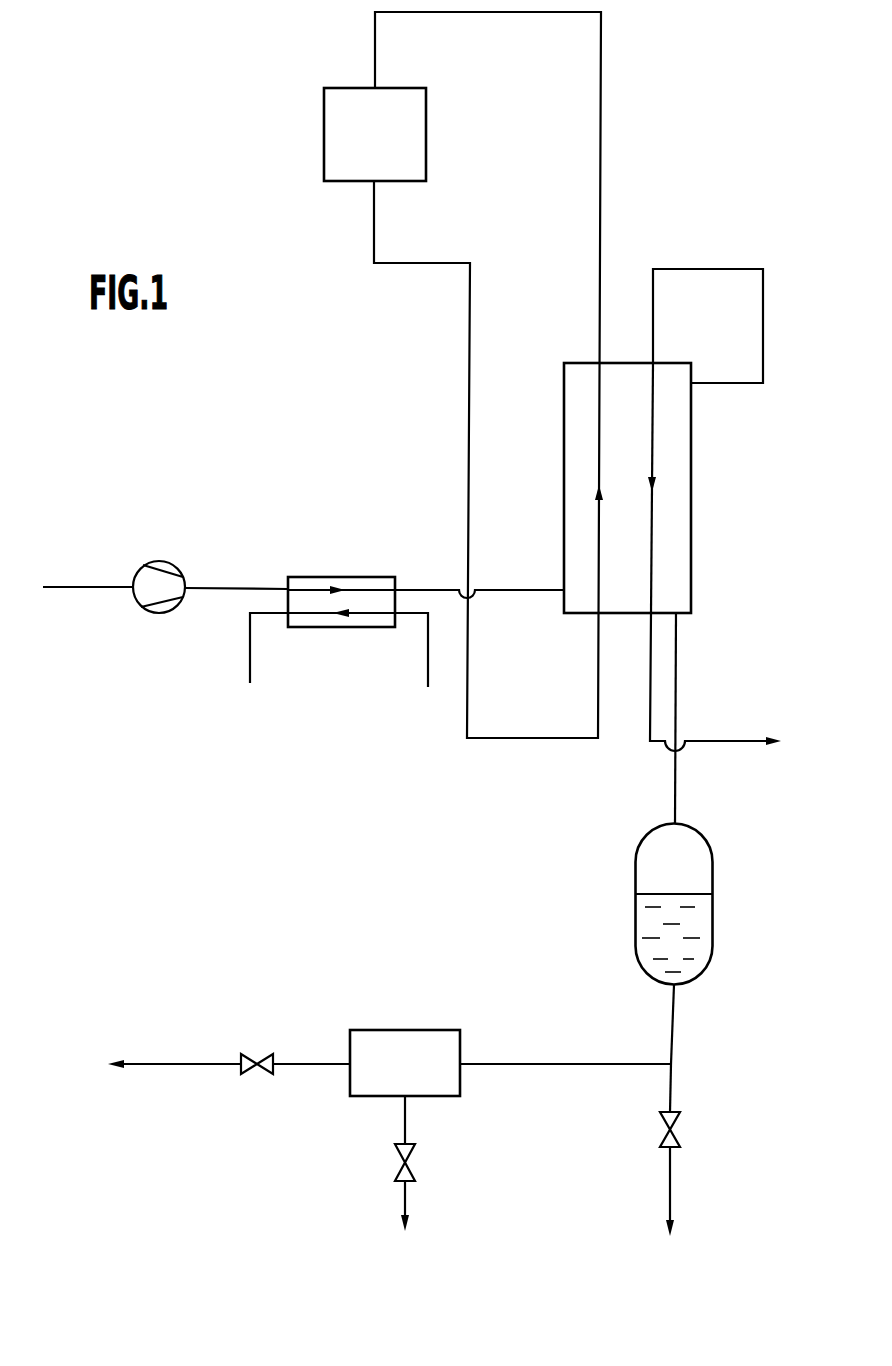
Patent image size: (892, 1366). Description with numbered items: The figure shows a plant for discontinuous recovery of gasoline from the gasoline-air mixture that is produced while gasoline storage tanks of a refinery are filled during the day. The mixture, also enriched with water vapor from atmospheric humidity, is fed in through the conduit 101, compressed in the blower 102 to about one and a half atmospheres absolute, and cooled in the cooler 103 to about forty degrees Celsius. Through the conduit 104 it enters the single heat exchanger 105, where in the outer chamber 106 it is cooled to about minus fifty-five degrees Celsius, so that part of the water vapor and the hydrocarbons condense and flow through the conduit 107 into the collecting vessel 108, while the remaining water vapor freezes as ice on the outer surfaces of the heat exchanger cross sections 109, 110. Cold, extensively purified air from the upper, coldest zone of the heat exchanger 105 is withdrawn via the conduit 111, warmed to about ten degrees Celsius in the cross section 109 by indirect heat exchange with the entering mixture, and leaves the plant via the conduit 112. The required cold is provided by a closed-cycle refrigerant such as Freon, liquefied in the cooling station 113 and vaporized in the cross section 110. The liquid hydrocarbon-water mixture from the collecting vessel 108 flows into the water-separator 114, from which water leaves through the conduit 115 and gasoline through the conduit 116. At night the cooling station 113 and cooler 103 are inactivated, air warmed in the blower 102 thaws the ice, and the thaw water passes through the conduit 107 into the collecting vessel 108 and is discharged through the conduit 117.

The conduit 101 is at (90, 589).
The blower 102 is at (159, 613).
The cooler 103 is at (311, 576).
The conduit 104 is at (513, 589).
The heat exchanger 105 is at (691, 528).
The outer chamber 106 is at (642, 513).
The conduit 107 is at (676, 783).
The collecting vessel 108 is at (703, 918).
The heat exchanger cross section 109 is at (652, 438).
The heat exchanger cross section 110 is at (598, 432).
The conduit 111 is at (763, 338).
The conduit 112 is at (742, 739).
The cooling station 113 is at (426, 152).
The water-separator 114 is at (427, 1029).
The conduit 115 is at (405, 1198).
The conduit 116 is at (295, 1059).
The conduit 117 is at (670, 1188).